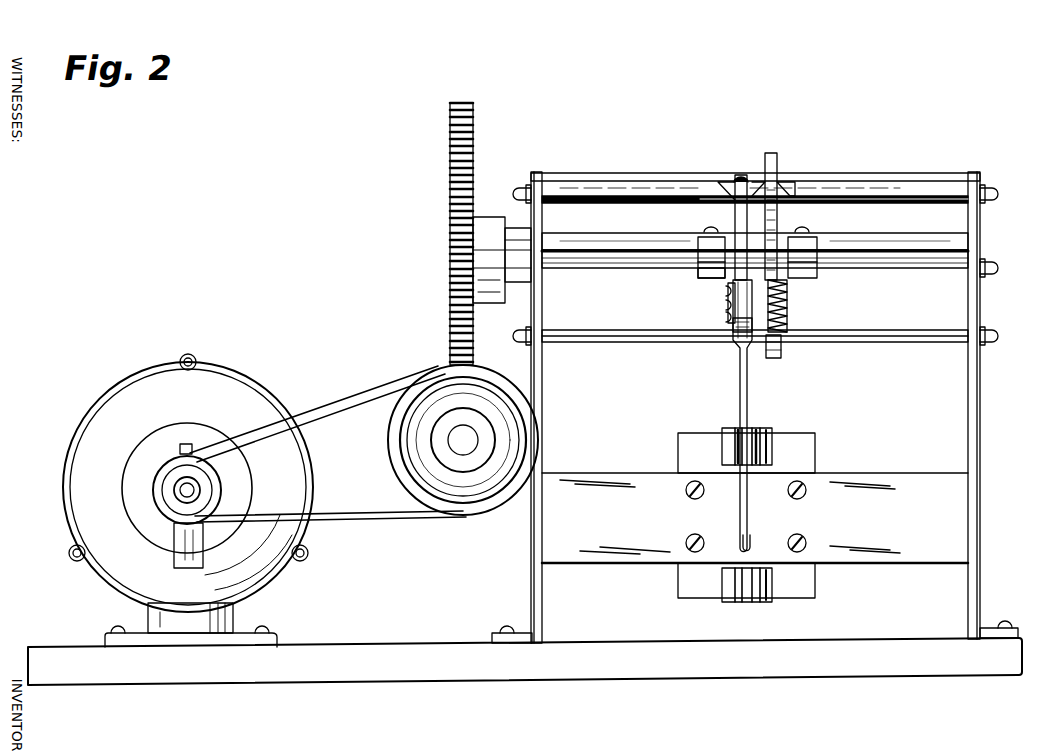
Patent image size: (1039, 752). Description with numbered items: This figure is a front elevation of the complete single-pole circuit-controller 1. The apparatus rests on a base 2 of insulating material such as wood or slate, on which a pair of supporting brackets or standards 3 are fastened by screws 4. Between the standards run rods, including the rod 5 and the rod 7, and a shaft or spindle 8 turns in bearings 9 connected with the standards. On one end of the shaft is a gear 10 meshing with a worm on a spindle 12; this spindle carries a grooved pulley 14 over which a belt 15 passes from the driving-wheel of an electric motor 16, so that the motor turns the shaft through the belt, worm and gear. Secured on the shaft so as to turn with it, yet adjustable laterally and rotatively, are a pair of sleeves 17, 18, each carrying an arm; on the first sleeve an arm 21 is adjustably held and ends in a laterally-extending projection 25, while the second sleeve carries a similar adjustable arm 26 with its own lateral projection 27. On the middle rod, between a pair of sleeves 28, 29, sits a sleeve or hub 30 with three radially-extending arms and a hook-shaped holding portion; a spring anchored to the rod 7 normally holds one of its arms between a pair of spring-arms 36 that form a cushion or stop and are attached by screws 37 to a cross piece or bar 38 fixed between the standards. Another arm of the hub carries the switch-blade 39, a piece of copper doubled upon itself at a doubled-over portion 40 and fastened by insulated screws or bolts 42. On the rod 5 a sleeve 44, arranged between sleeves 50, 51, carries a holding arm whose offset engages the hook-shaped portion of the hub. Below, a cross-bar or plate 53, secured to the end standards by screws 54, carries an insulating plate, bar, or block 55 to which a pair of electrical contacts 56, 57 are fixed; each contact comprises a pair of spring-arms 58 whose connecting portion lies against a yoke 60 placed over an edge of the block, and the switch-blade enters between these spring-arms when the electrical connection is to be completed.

The single-pole circuit-controller 1 is at (712, 392).
The base 2 is at (345, 647).
The supporting brackets or standards 3 is at (545, 400).
The screws 4 is at (505, 628).
The rod 5 is at (516, 196).
The rod 7 is at (912, 343).
The shaft or spindle 8 is at (755, 255).
The bearings 9 is at (525, 290).
The gear 10 is at (450, 193).
The spindle 12 is at (465, 445).
The pulley 14 is at (395, 438).
The belt 15 is at (352, 402).
The electric motor 16 is at (238, 385).
The sleeve 17 is at (705, 273).
The sleeve 18 is at (840, 263).
The arm 21 is at (728, 320).
The laterally-extending projection 25 is at (726, 343).
The arm 26 is at (787, 312).
The laterally-extending projection 27 is at (781, 355).
The sleeve 28 is at (600, 243).
The sleeve 29 is at (858, 242).
The sleeve or hub 30 is at (698, 240).
The spring-arms 36 is at (712, 185).
The screws 37 is at (744, 172).
The cross piece or bar 38 is at (667, 175).
The switch-blade 39 is at (744, 542).
The doubled-over portion 40 is at (740, 418).
The insulated screws or bolts 42 is at (733, 328).
The sleeve 44 is at (793, 188).
The sleeve 50 is at (645, 203).
The sleeve 51 is at (938, 203).
The cross-bar or plate 53 is at (755, 518).
The screws 54 is at (695, 498).
The insulating plate, bar, or block 55 is at (680, 455).
The electrical contact 56 is at (728, 440).
The electrical contact 57 is at (735, 600).
The spring-arms 58 is at (722, 445).
The yoke 60 is at (772, 430).